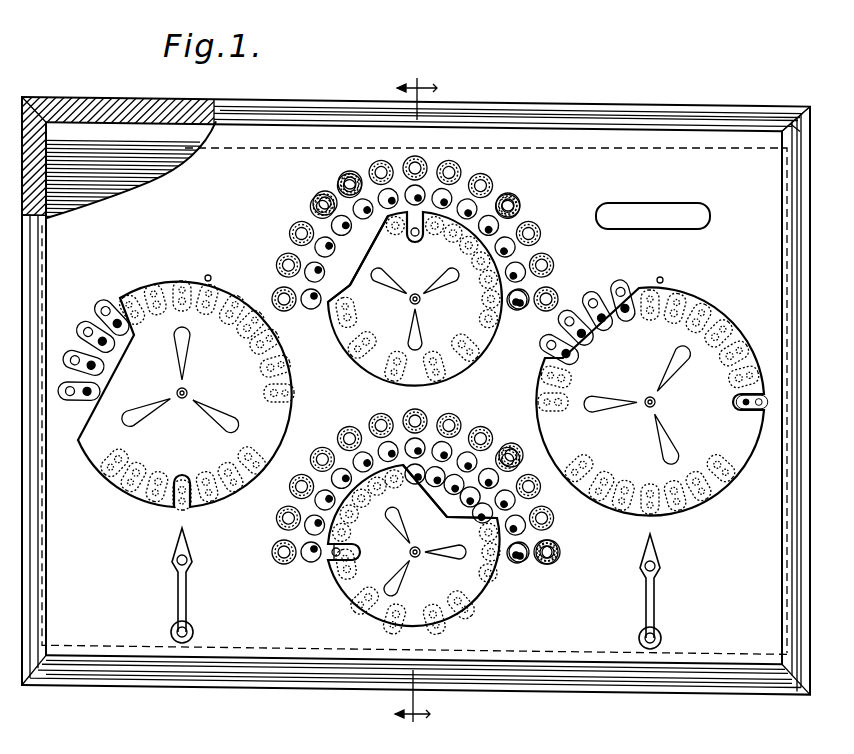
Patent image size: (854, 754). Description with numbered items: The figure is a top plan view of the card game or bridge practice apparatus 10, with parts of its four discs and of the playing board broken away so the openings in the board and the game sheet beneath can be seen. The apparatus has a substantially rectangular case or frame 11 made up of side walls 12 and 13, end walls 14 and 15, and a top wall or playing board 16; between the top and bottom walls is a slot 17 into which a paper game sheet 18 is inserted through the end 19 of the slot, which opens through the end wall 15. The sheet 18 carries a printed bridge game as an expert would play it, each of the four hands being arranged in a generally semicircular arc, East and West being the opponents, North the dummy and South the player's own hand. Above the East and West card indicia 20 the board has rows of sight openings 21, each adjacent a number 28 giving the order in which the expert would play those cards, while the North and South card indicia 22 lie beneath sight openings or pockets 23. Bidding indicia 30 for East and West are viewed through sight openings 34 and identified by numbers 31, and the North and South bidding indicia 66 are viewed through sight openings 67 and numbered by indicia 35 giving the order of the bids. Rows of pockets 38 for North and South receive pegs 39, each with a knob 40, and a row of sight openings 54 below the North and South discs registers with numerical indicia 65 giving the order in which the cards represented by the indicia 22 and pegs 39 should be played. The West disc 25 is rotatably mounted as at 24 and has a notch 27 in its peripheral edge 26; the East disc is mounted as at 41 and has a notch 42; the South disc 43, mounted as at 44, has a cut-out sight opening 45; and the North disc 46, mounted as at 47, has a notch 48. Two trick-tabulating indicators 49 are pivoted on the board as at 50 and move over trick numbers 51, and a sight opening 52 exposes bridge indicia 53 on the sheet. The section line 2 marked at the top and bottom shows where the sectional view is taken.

The section line 2 is at (416, 401).
The card game practice apparatus 10 is at (605, 695).
The case or frame 11 is at (512, 672).
The side wall 12 is at (547, 120).
The side wall 13 is at (281, 672).
The end wall 14 is at (48, 227).
The end wall 15 is at (788, 257).
The top wall 16 is at (254, 155).
The slot 17 is at (143, 139).
The game sheet 18 is at (77, 158).
The end of slot 19 is at (807, 147).
The card indicia 20 is at (86, 398).
The sight openings 21 is at (113, 322).
The card indicia 22 is at (512, 238).
The sight openings or pockets 23 is at (528, 265).
The pivot mounting 24 is at (188, 391).
The disc 25 is at (293, 412).
The peripheral edge 26 is at (103, 462).
The notch 27 is at (198, 480).
The numerical indicia 28 is at (210, 276).
The bidding indicia 30 is at (158, 478).
The numbers 31 is at (118, 500).
The sight opening 34 is at (248, 462).
The numerical indicia 35 is at (345, 362).
The pockets 38 is at (303, 229).
The peg 39 is at (312, 203).
The finger grip or knob 40 is at (345, 183).
The pivot mounting 41 is at (657, 402).
The notch 42 is at (740, 407).
The disc 43 is at (500, 594).
The south dial pivot 44 is at (420, 556).
The cut-out portion 45 is at (356, 546).
The disc 46 is at (481, 338).
The pivot mounting 47 is at (421, 300).
The notch 48 is at (422, 236).
The trick pointer 49 is at (186, 610).
The pivot 50 is at (171, 633).
The numbers 51 is at (100, 590).
The sight opening 52 is at (650, 205).
The bridge indicia 53 is at (686, 210).
The sight openings 54 is at (340, 292).
The numerical indicia 65 is at (332, 273).
The bidding indicia 66 is at (388, 362).
The sight opening 67 is at (462, 355).